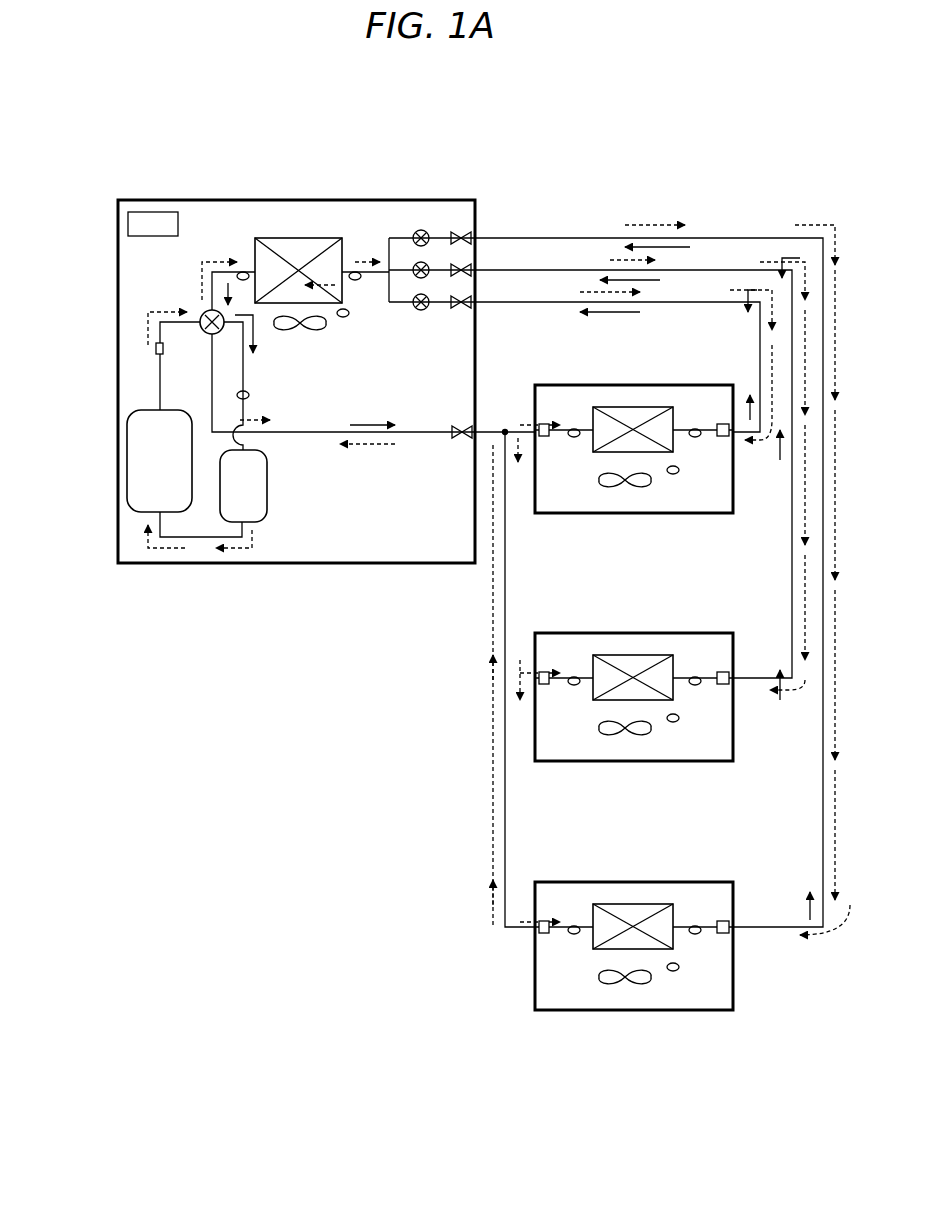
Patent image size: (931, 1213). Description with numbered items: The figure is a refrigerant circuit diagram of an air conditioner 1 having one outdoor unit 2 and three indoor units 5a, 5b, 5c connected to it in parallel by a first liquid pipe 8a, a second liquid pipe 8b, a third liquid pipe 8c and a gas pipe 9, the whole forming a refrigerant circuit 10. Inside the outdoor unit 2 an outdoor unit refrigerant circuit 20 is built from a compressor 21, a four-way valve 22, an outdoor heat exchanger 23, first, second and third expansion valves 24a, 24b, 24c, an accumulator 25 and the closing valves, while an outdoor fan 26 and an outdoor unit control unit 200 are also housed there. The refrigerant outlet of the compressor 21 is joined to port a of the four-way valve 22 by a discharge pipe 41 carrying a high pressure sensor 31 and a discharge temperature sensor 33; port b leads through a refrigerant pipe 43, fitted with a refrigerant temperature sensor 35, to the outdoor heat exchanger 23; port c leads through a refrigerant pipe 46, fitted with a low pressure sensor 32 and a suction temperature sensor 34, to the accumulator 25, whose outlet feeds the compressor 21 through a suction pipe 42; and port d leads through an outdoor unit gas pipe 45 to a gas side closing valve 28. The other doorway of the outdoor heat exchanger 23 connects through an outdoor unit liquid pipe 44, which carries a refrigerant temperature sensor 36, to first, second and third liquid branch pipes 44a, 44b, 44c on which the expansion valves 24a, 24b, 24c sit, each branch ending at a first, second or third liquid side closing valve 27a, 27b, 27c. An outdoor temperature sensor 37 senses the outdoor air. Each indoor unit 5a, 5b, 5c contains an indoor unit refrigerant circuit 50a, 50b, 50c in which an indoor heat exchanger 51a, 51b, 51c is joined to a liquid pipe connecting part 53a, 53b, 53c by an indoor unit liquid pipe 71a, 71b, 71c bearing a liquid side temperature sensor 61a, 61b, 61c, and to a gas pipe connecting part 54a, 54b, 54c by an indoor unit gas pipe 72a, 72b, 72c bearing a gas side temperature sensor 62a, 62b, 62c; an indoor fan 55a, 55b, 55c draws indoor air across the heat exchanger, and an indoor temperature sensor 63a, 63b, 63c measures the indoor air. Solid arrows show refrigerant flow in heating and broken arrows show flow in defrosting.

The air conditioner 1 is at (783, 183).
The outdoor unit 2 is at (295, 369).
The indoor unit 5a is at (632, 437).
The indoor unit 5b is at (632, 685).
The indoor unit 5c is at (632, 934).
The first liquid pipe 8a is at (556, 300).
The second liquid pipe 8b is at (602, 268).
The third liquid pipe 8c is at (655, 236).
The gas pipe 9 is at (505, 617).
The refrigerant circuit 10 is at (713, 227).
The outdoor unit refrigerant circuit 20 is at (375, 497).
The compressor 21 is at (127, 442).
The four-way valve 22 is at (200, 316).
The outdoor heat exchanger 23 is at (312, 238).
The first expansion valve 24a is at (418, 300).
The second expansion valve 24b is at (430, 266).
The third expansion valve 24c is at (421, 230).
The accumulator 25 is at (258, 525).
The outdoor fan 26 is at (315, 327).
The first liquid side closing valve 27a is at (476, 285).
The second liquid side closing valve 27b is at (476, 251).
The third liquid side closing valve 27c is at (476, 214).
The gas side closing valve 28 is at (470, 427).
The high pressure sensor 31 is at (150, 335).
The low pressure sensor 32 is at (200, 402).
The discharge temperature sensor 33 is at (154, 348).
The suction temperature sensor 34 is at (249, 402).
The refrigerant temperature sensor 35 is at (240, 268).
The refrigerant temperature sensor 36 is at (352, 268).
The outdoor temperature sensor 37 is at (345, 320).
The discharge pipe 41 is at (158, 372).
The suction pipe 42 is at (158, 522).
The refrigerant pipe 43 is at (203, 310).
The outdoor unit liquid pipe 44 is at (378, 262).
The first liquid branch pipe 44a is at (464, 276).
The second liquid branch pipe 44b is at (466, 308).
The third liquid branch pipe 44c is at (466, 234).
The outdoor unit gas pipe 45 is at (400, 434).
The refrigerant pipe 46 is at (255, 350).
The indoor unit refrigerant circuit 50a is at (688, 468).
The indoor unit refrigerant circuit 50b is at (688, 716).
The indoor unit refrigerant circuit 50c is at (688, 965).
The indoor heat exchanger 51a is at (632, 407).
The indoor heat exchanger 51b is at (632, 655).
The indoor heat exchanger 51c is at (632, 904).
The liquid pipe connecting part 53a is at (727, 424).
The liquid pipe connecting part 53b is at (727, 672).
The liquid pipe connecting part 53c is at (727, 921).
The gas pipe connecting part 54a is at (548, 438).
The gas pipe connecting part 54b is at (548, 686).
The gas pipe connecting part 54c is at (548, 935).
The indoor fan 55a is at (615, 486).
The indoor fan 55b is at (615, 734).
The indoor fan 55c is at (615, 983).
The liquid side temperature sensor 61a is at (696, 428).
The liquid side temperature sensor 61b is at (696, 676).
The liquid side temperature sensor 61c is at (696, 925).
The gas side temperature sensor 62a is at (578, 438).
The gas side temperature sensor 62b is at (578, 686).
The gas side temperature sensor 62c is at (578, 935).
The indoor temperature sensor 63a is at (673, 475).
The indoor temperature sensor 63b is at (673, 723).
The indoor temperature sensor 63c is at (673, 972).
The indoor unit liquid pipe 71a is at (684, 430).
The indoor unit liquid pipe 71b is at (684, 678).
The indoor unit liquid pipe 71c is at (684, 927).
The indoor unit gas pipe 72a is at (584, 430).
The indoor unit gas pipe 72b is at (584, 678).
The indoor unit gas pipe 72c is at (584, 927).
The outdoor unit control unit 200 is at (153, 224).